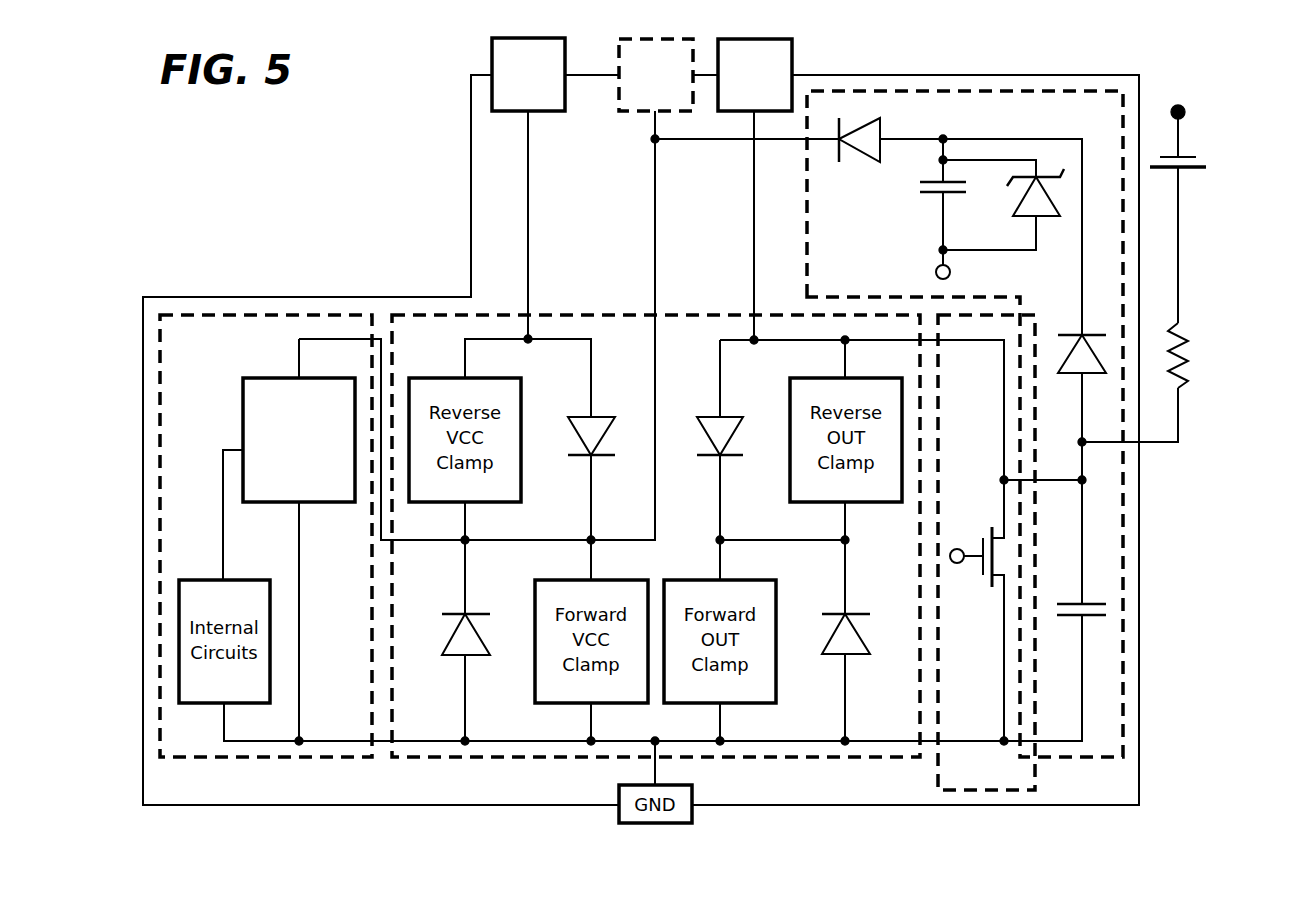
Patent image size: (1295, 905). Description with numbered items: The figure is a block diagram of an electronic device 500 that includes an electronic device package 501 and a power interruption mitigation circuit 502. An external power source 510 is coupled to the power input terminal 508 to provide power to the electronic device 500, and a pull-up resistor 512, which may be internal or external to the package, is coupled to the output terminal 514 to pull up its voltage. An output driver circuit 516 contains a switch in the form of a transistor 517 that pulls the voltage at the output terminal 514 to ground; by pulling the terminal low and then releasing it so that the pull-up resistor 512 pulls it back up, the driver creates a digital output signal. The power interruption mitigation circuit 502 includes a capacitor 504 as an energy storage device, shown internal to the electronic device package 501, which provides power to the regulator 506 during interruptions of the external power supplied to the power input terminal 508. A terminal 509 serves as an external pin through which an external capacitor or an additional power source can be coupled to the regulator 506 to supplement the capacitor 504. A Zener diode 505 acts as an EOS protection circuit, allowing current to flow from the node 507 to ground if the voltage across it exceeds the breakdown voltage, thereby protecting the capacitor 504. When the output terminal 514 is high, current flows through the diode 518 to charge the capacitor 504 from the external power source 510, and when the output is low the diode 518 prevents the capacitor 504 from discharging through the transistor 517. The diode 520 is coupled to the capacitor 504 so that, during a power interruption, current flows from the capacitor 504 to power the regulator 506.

The electronic device 500 is at (352, 156).
The electronic device package 501 is at (996, 75).
The power interruption mitigation circuit 502 is at (965, 424).
The capacitor 504 is at (921, 182).
The Zener diode 505 is at (1052, 217).
The regulator 506 is at (289, 540).
The node 507 is at (995, 139).
The power input terminal 508 is at (528, 74).
The terminal 509 is at (656, 75).
The external power source 510 is at (1196, 160).
The pull-up resistor 512 is at (1193, 364).
The output terminal 514 is at (755, 75).
The output driver circuit 516 is at (986, 552).
The transistor 517 is at (990, 526).
The diode 518 is at (1063, 362).
The diode 520 is at (866, 128).